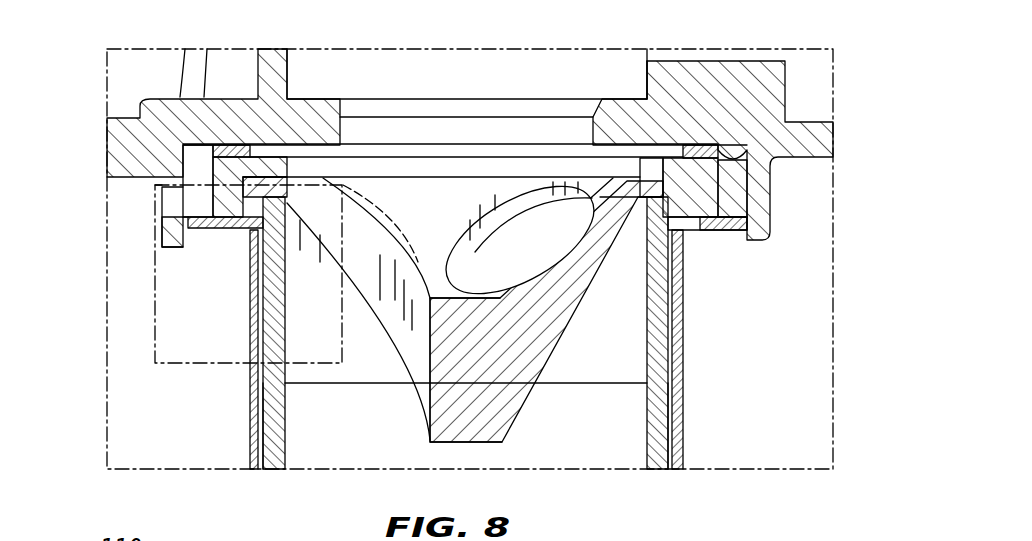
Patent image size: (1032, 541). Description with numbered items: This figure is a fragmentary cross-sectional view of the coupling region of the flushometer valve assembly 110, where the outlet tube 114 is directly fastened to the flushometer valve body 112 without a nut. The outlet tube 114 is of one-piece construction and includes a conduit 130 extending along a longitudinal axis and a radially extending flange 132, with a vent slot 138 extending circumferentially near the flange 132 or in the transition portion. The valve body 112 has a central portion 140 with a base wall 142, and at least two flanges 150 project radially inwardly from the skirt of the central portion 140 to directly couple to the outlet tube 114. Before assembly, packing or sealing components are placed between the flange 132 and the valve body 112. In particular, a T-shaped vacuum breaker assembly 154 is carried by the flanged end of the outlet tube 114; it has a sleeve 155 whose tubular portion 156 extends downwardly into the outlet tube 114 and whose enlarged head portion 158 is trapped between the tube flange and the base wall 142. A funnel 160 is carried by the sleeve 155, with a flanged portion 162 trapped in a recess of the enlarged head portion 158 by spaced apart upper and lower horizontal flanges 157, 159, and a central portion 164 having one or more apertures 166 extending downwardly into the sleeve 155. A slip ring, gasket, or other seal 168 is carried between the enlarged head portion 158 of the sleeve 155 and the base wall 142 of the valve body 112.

The flushometer valve assembly 110 is at (92, 160).
The flushometer valve body 112 is at (800, 100).
The outlet tube 114 is at (245, 395).
The conduit 130 is at (688, 394).
The flange 132 is at (207, 231).
The vent slot 138 is at (251, 233).
The central portion 140 is at (258, 112).
The base wall 142 is at (736, 154).
The flanges 150 is at (194, 236).
The vacuum breaker assembly 154 is at (615, 310).
The sleeve 155 is at (660, 472).
The tubular portion 156 is at (280, 383).
The upper horizontal flange 157 is at (680, 170).
The enlarged head portion 158 is at (224, 224).
The lower horizontal flange 159 is at (690, 210).
The funnel 160 is at (422, 402).
The flanged portion 162 is at (683, 190).
The central portion 164 is at (453, 372).
The aperture 166 is at (474, 256).
The seal 168 is at (216, 158).